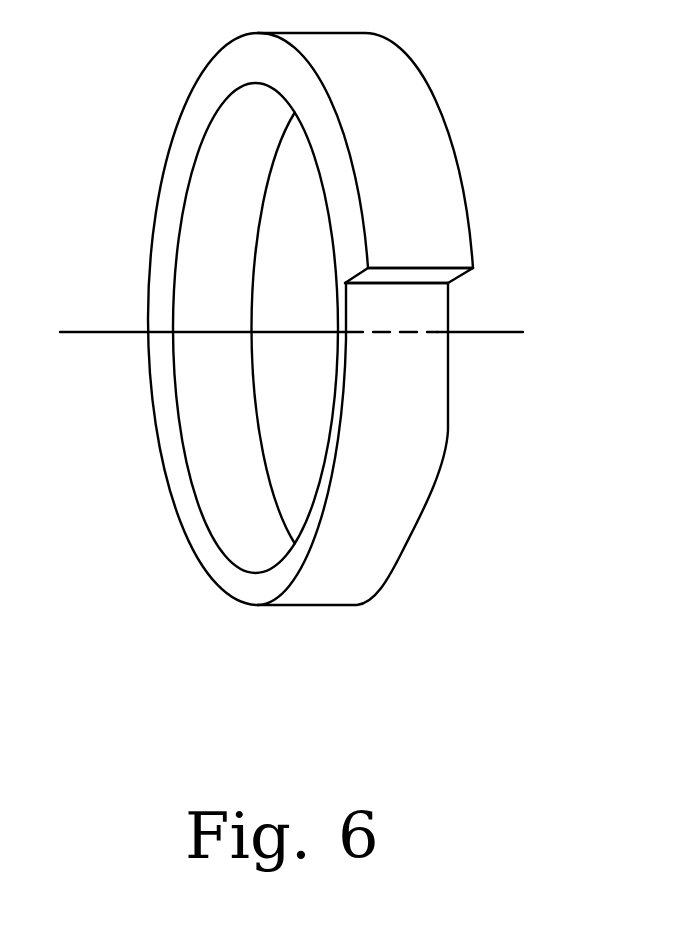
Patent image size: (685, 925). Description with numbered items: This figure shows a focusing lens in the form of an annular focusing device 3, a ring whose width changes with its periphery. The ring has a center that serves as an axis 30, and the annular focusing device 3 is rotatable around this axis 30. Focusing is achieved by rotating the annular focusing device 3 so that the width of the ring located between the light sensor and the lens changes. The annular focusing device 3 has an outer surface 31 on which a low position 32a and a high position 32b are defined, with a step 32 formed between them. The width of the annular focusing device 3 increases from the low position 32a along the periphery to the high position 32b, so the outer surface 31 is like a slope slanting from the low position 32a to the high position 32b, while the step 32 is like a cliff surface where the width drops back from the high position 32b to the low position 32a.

The annular focusing device 3 is at (363, 358).
The axis 30 is at (503, 333).
The outer surface 31 is at (375, 60).
The step 32 is at (482, 212).
The low position 32a is at (362, 286).
The high position 32b is at (415, 267).